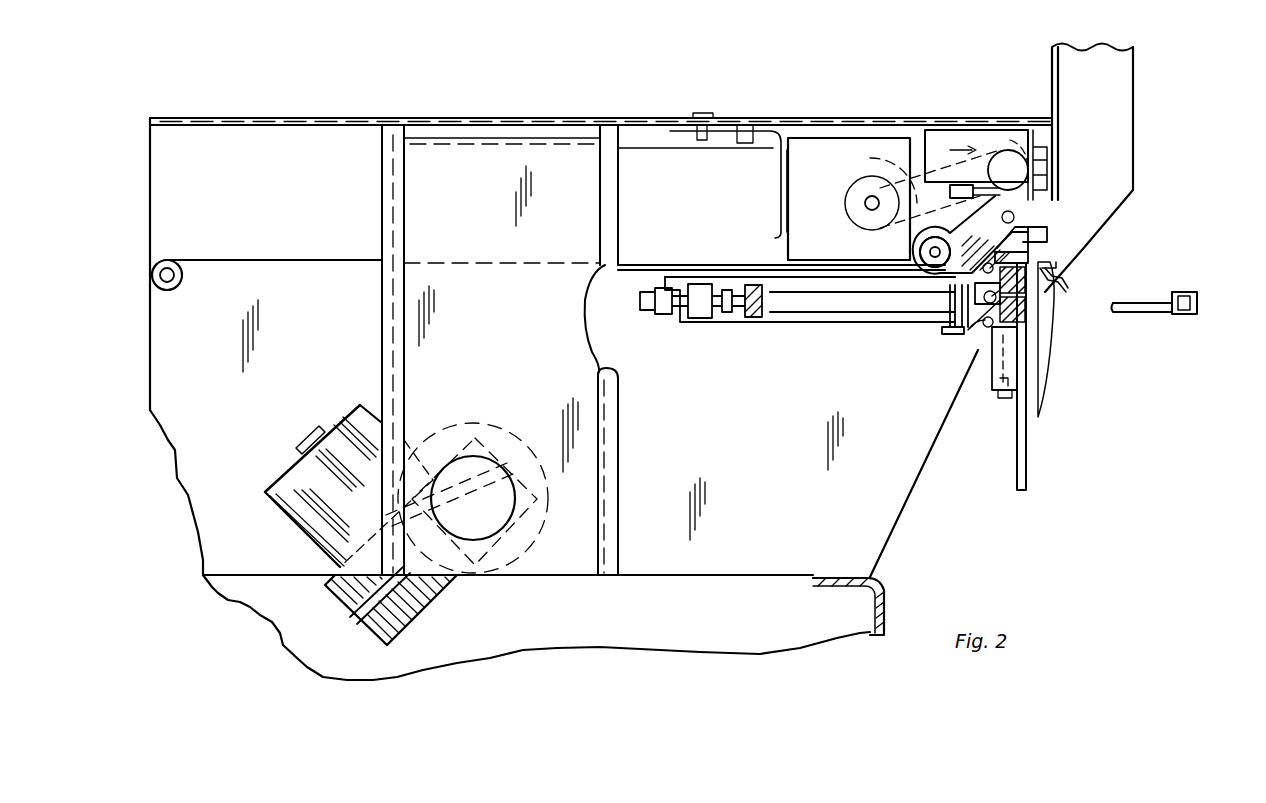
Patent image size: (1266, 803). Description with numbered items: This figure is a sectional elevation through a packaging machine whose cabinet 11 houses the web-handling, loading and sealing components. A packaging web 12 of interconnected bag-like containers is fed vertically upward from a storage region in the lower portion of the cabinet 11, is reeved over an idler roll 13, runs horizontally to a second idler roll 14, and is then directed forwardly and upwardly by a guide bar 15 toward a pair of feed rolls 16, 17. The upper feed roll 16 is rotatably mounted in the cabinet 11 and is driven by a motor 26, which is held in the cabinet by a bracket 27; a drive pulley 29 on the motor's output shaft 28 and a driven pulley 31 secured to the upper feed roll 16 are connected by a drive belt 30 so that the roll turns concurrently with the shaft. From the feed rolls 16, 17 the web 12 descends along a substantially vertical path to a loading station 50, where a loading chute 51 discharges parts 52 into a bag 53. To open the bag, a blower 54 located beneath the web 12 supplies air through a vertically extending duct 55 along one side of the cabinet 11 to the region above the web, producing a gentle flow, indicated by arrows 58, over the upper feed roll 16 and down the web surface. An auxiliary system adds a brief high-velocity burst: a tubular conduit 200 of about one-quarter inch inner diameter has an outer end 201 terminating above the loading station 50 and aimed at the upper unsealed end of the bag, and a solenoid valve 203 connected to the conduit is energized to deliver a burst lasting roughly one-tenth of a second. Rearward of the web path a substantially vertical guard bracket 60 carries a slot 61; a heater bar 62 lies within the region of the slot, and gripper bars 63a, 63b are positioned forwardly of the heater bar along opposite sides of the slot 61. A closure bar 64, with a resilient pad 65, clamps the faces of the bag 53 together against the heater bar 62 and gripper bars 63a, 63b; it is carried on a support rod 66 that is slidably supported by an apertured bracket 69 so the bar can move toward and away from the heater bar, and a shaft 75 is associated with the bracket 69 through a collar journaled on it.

The cabinet 11 is at (600, 120).
The packaging web 12 is at (244, 256).
The idler roll 13 is at (178, 286).
The idler roll 14 is at (920, 252).
The guide bar 15 is at (958, 308).
The upper feed roll 16 is at (1000, 170).
The feed roll 17 is at (943, 244).
The motor 26 is at (822, 163).
The bracket 27 is at (779, 180).
The output shaft 28 is at (866, 198).
The drive pulley 29 is at (856, 214).
The drive belt 30 is at (882, 172).
The driven pulley 31 is at (990, 145).
The loading station 50 is at (1082, 285).
The loading chute 51 is at (1118, 185).
The parts 52 is at (1064, 288).
The bag 53 is at (1045, 392).
The blower 54 is at (288, 522).
The vertically extending duct 55 is at (580, 500).
The arrows 58 is at (1008, 148).
The guard bracket 60 is at (1022, 370).
The slot 61 is at (1030, 296).
The heater bar 62 is at (982, 330).
The gripper bar 63a is at (1030, 276).
The gripper bar 63b is at (1025, 305).
The closure bar 64 is at (1198, 300).
The resilient pad 65 is at (1176, 288).
The support rod 66 is at (1128, 312).
The apertured bracket 69 is at (716, 318).
The shaft 75 is at (845, 300).
The tubular conduit 200 is at (970, 235).
The outer end 201 is at (1040, 248).
The solenoid valve 203 is at (956, 196).